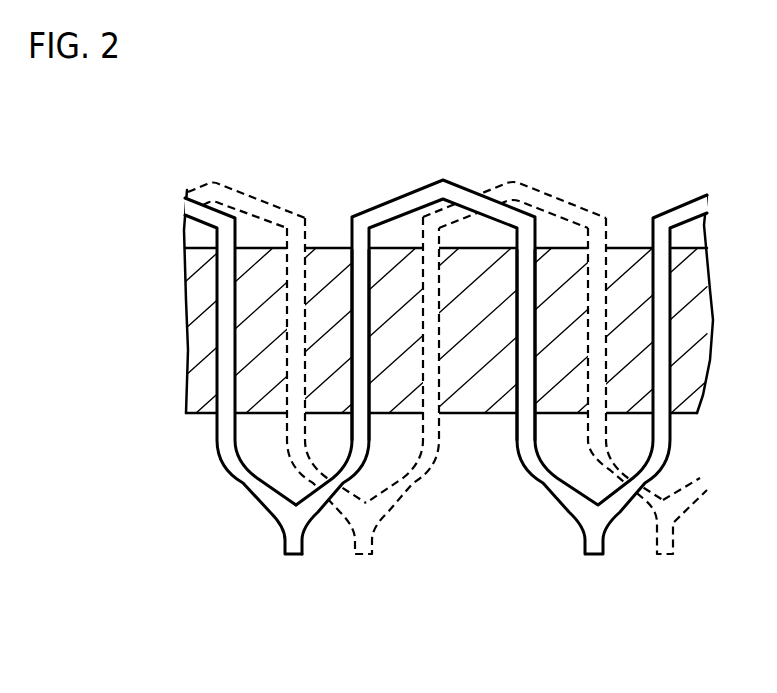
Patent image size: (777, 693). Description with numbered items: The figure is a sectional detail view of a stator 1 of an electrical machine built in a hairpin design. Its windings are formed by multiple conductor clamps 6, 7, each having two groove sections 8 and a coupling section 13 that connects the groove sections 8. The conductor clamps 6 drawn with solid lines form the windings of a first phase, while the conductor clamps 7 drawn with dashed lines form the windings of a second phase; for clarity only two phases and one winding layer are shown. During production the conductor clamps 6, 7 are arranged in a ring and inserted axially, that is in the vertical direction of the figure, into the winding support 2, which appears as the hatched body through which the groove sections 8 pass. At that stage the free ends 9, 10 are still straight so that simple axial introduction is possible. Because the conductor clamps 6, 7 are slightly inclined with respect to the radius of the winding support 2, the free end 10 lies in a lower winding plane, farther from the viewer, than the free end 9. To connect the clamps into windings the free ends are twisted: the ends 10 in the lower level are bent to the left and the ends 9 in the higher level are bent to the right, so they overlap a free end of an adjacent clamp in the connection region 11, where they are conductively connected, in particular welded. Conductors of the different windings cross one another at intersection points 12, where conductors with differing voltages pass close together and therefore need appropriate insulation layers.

The stator 1 is at (448, 387).
The winding support 2 is at (622, 248).
The conductor clamp 6 is at (446, 173).
The conductor clamp 7 is at (588, 187).
The groove section 8 is at (362, 268).
The free end 9 is at (559, 499).
The free end 10 is at (362, 471).
The connection region 11 is at (267, 532).
The intersection point 12 is at (332, 517).
The coupling section 13 is at (473, 182).